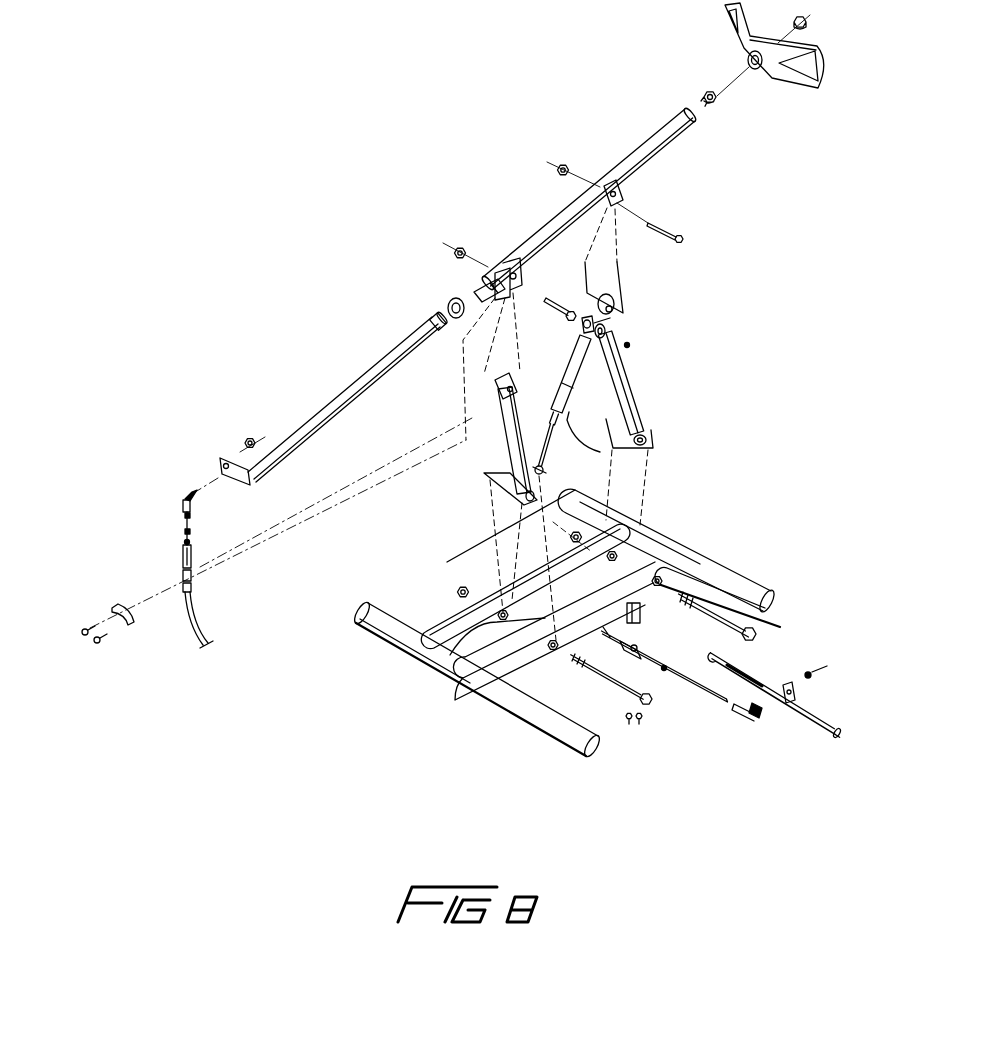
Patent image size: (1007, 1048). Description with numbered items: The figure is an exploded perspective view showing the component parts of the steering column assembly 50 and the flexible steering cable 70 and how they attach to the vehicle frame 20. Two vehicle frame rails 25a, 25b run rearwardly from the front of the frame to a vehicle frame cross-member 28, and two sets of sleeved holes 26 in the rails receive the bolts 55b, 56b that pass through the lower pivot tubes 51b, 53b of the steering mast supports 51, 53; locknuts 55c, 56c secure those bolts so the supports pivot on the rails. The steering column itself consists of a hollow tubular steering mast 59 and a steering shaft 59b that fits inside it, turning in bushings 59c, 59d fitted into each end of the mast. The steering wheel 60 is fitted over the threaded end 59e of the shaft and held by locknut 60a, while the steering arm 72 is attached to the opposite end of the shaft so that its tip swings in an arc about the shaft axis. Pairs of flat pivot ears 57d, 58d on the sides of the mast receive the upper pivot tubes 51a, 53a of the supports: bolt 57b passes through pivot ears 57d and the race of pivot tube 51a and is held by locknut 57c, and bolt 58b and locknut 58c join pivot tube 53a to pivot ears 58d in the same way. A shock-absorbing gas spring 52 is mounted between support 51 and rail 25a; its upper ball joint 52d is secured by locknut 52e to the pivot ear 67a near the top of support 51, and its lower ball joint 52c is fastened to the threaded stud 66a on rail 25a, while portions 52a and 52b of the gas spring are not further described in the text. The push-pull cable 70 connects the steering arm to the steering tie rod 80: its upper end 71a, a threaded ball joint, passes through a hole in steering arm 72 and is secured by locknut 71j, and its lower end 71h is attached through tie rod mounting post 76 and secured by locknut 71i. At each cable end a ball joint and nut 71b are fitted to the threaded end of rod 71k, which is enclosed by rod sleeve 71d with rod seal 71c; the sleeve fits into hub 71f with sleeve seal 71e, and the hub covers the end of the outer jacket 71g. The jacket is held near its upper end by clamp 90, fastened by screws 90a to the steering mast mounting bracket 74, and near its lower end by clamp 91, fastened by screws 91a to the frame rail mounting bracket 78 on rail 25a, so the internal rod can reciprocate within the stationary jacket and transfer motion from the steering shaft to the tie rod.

The vehicle frame 20 is at (397, 641).
The vehicle frame rail 25a is at (507, 690).
The vehicle frame rail 25b is at (450, 623).
The sleeved holes 26 is at (452, 664).
The vehicle frame cross-member 28 is at (773, 596).
The steering column assembly 50 is at (641, 104).
The steering mast support 51 is at (623, 370).
The pivot tube 51a is at (613, 302).
The lower pivot tube 51b is at (641, 432).
The shock-absorbing damper element 52 is at (566, 373).
The shock absorber cylinder 52a is at (577, 370).
The shock mounting bracket 52b is at (600, 452).
The ball joint 52c is at (544, 469).
The upper ball joint 52d is at (587, 316).
The locknut 52e is at (629, 347).
The steering mast support 53 is at (500, 420).
The pivot tube 53a is at (494, 380).
The lower pivot tube 53b is at (497, 482).
The bolt 55b is at (714, 612).
The locknut 55c is at (569, 545).
The bolt 56b is at (607, 678).
The locknut 56c is at (463, 585).
The bolt 57b is at (684, 238).
The locknut 57c is at (566, 163).
The pivot ears 57d is at (630, 193).
The bolt 58b is at (556, 298).
The locknut 58c is at (463, 247).
The pivot ears 58d is at (512, 268).
The steering mast 59 is at (680, 140).
The steering shaft 59b is at (405, 352).
The bushing 59c is at (714, 104).
The bushing 59d is at (447, 304).
The threaded end 59e is at (430, 318).
The steering wheel 60 is at (830, 69).
The locknut 60a is at (810, 22).
The threaded stud 66a is at (472, 680).
The pivot ear 67a is at (608, 324).
The flexible steering cable 70 is at (148, 556).
The upper end 71a is at (185, 494).
The nut 71b is at (183, 517).
The rod seal 71c is at (195, 543).
The rod sleeve 71d is at (191, 556).
The sleeve seal 71e is at (191, 575).
The hub 71f is at (191, 587).
The jacket 71g is at (201, 630).
The lower end 71h is at (751, 719).
The locknut 71i is at (813, 678).
The locknut 71j is at (251, 438).
The rod 71k is at (185, 532).
The steering arm 72 is at (221, 456).
The steering mast mounting bracket 74 is at (450, 298).
The tie rod mounting post 76 is at (794, 697).
The frame rail mounting bracket 78 is at (712, 612).
The steering tie rod 80 is at (771, 690).
The clamp 90 is at (130, 621).
The screws 90a is at (97, 644).
The clamp 91 is at (651, 668).
The screws 91a is at (640, 724).